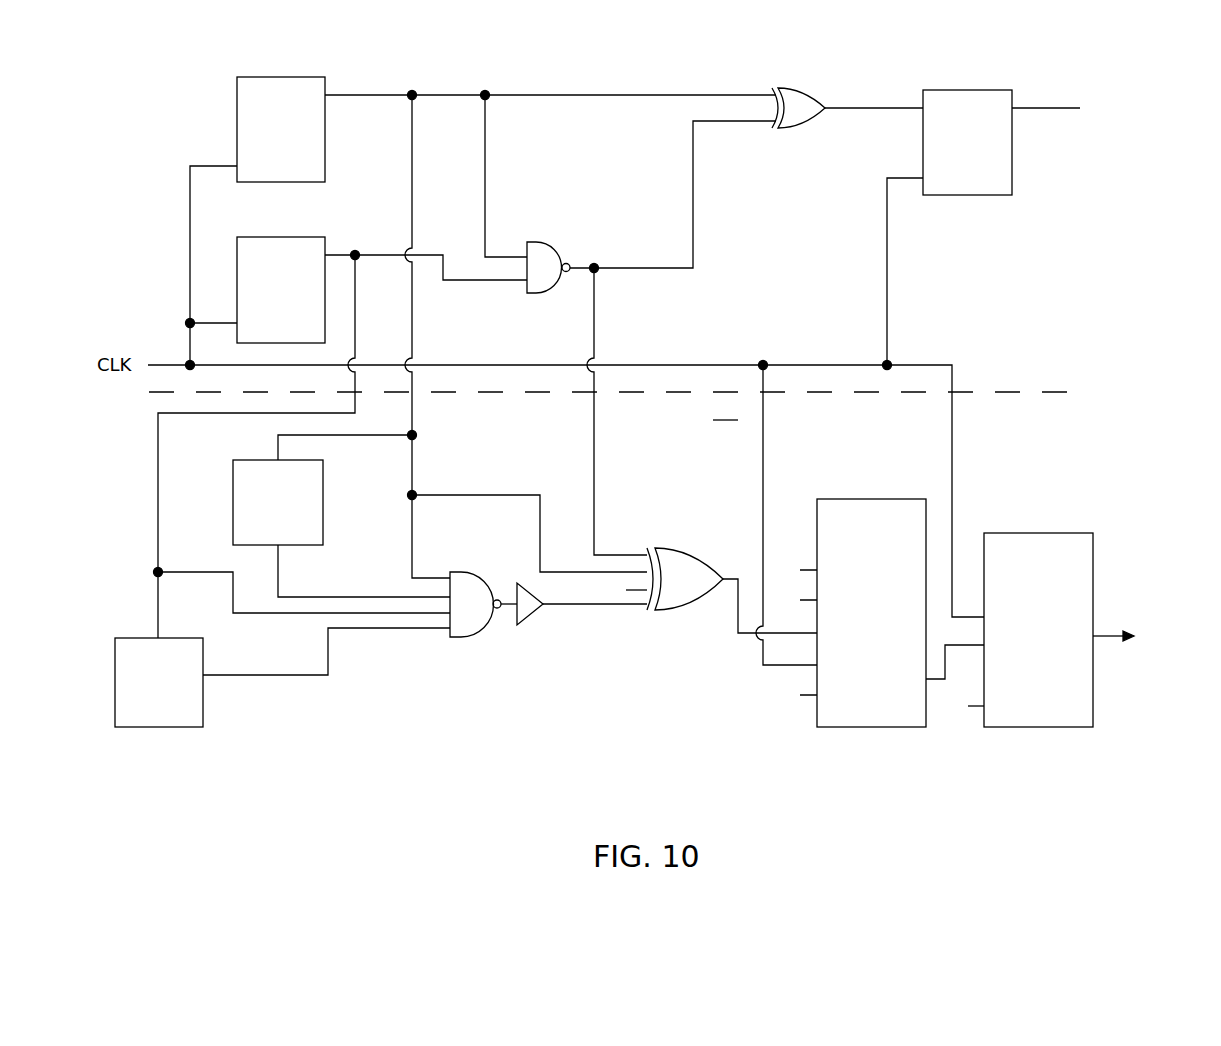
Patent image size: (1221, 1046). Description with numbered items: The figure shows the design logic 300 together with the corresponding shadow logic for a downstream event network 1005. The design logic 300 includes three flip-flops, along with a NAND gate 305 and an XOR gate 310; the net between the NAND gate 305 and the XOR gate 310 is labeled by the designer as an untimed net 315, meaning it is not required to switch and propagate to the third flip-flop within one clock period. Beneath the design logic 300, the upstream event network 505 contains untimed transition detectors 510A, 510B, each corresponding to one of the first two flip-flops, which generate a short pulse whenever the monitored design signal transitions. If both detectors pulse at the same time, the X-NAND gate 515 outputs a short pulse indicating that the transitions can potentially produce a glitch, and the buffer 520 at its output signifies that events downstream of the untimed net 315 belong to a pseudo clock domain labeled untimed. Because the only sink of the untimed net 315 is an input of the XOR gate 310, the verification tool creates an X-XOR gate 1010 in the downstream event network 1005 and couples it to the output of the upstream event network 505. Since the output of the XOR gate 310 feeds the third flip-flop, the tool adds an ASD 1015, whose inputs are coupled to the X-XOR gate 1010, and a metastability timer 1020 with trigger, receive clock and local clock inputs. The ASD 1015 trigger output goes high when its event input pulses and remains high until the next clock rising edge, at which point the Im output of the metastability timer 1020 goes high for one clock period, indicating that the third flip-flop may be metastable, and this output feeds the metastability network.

The design logic 300 is at (1105, 388).
The NAND gate 305 is at (537, 242).
The XOR gate 310 is at (790, 130).
The untimed net 315 is at (693, 176).
The upstream event network 505 is at (553, 757).
The untimed transition detector 510A is at (278, 502).
The untimed transition detector 510B is at (159, 682).
The X-NAND gate 515 is at (463, 640).
The buffer 520 is at (532, 614).
The downstream event network 1005 is at (1127, 757).
The X-XOR gate 1010 is at (683, 548).
The ASD 1015 is at (875, 499).
The metastability timer 1020 is at (1042, 533).